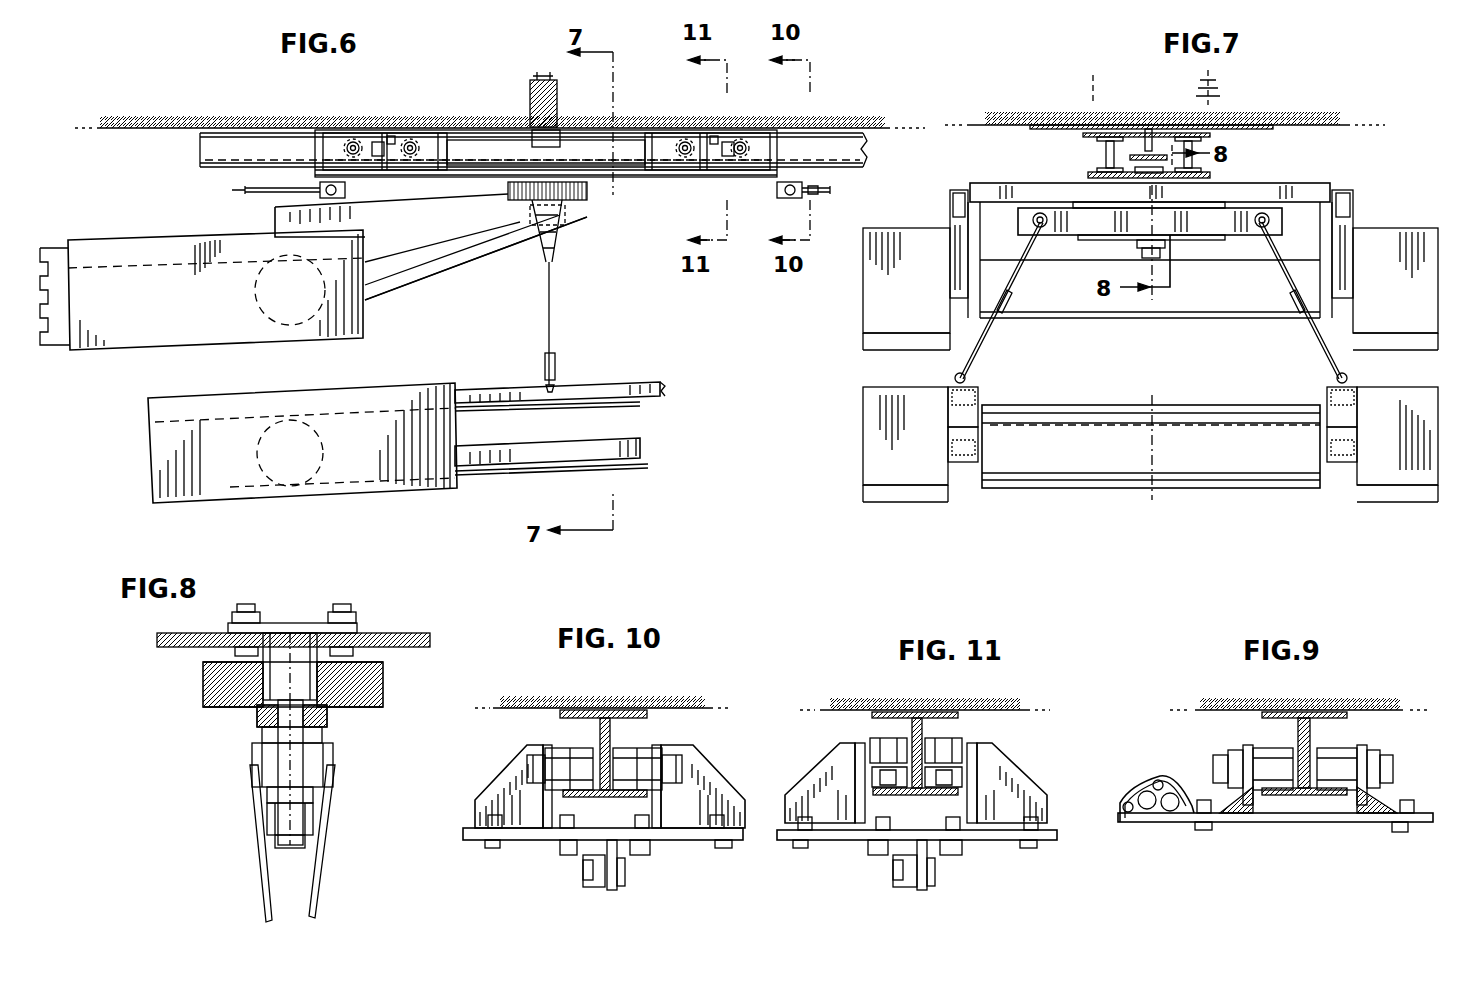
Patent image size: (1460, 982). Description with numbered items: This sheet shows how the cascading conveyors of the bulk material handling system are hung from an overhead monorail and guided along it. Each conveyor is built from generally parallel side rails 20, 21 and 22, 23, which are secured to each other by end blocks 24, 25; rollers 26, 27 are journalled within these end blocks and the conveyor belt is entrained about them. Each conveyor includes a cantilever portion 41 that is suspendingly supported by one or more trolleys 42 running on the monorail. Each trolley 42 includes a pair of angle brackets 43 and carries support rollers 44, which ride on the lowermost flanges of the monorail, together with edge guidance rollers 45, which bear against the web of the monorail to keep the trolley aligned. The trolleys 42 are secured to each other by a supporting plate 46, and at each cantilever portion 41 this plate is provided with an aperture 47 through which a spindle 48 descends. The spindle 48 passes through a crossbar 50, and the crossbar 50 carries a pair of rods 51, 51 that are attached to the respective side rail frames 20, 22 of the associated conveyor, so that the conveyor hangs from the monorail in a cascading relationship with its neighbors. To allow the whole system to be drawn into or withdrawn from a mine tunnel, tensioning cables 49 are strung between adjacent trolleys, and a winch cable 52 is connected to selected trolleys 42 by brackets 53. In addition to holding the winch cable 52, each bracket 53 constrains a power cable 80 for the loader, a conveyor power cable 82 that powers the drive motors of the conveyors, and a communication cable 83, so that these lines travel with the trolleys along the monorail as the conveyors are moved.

In FIG. 6, the side rail 20 is at (612, 388).
In FIG. 7, the side rail 20 is at (978, 398).
In FIG. 6, the side rail 21 is at (640, 452).
In FIG. 7, the side rail 21 is at (965, 467).
In FIG. 7, the side rail 22 is at (1358, 398).
In FIG. 7, the side rail 23 is at (1352, 470).
In FIG. 6, the end block 24 is at (226, 472).
In FIG. 7, the end block 24 is at (905, 447).
In FIG. 7, the end block 25 is at (1382, 470).
In FIG. 6, the roller 26 is at (283, 420).
In FIG. 7, the roller 26 is at (1110, 468).
In FIG. 6, the roller 27 is at (340, 335).
In FIG. 7, the roller 27 is at (1208, 312).
In FIG. 6, the cantilever portion 41 is at (447, 274).
In FIG. 6, the trolley 42 is at (397, 130).
In FIG. 10, the angle bracket 43 is at (497, 773).
In FIG. 11, the angle bracket 43 is at (830, 768).
In FIG. 6, the support roller 44 is at (345, 140).
In FIG. 10, the support roller 44 is at (565, 745).
In FIG. 9, the support roller 44 is at (1272, 748).
In FIG. 6, the edge guidance roller 45 is at (374, 140).
In FIG. 11, the edge guidance roller 45 is at (885, 752).
In FIG. 6, the supporting plate 46 is at (645, 178).
In FIG. 9, the supporting plate 46 is at (1290, 823).
In FIG. 8, the aperture 47 is at (305, 632).
In FIG. 7, the spindle 48 is at (1148, 228).
In FIG. 8, the spindle 48 is at (300, 744).
In FIG. 6, the tensioning cable 49 is at (232, 190).
In FIG. 10, the tensioning cable 49 is at (605, 880).
In FIG. 7, the crossbar 50 is at (1058, 212).
In FIG. 8, the crossbar 50 is at (383, 680).
In FIG. 6, the rod 51 is at (553, 325).
In FIG. 7, the rod 51 is at (1002, 312).
In FIG. 8, the rod 51 is at (262, 864).
In FIG. 9, the winch cable 52 is at (1140, 820).
In FIG. 9, the bracket 53 is at (1160, 782).
In FIG. 9, the power cable 80 is at (1170, 815).
In FIG. 9, the conveyor power cable 82 is at (1125, 805).
In FIG. 9, the communication cable 83 is at (1163, 783).